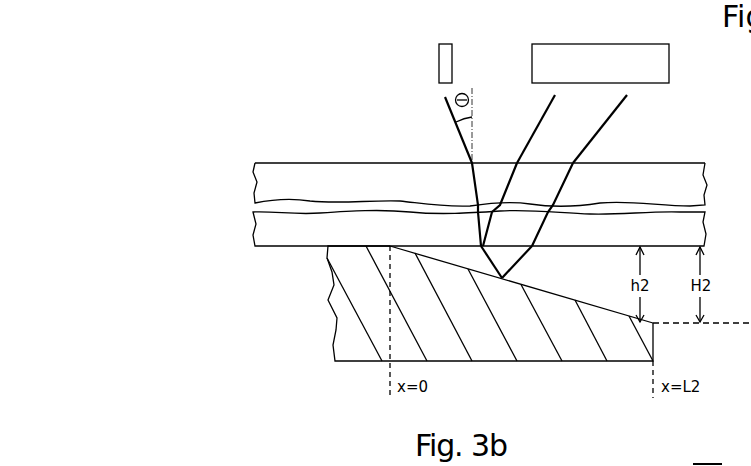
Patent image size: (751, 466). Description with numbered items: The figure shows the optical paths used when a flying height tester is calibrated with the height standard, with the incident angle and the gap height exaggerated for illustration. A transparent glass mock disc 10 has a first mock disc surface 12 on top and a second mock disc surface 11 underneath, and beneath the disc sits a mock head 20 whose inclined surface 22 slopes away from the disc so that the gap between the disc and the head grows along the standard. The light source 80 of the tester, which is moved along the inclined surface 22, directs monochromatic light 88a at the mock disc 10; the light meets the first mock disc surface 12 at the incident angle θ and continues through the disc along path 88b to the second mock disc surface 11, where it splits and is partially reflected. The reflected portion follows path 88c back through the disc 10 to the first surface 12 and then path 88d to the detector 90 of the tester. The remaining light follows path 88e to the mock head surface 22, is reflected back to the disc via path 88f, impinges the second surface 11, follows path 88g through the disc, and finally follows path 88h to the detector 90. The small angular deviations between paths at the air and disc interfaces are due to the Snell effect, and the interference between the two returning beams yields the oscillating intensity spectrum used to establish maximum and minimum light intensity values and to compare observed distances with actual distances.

The mock disc 10 is at (308, 180).
The first mock disc surface 12 is at (344, 163).
The second mock disc surface 11 is at (665, 247).
The light source 80 is at (442, 48).
The detector 90 is at (600, 49).
The monochromatic light 88a is at (458, 129).
The path 88b is at (474, 193).
The path 88c is at (505, 193).
The path 88d is at (532, 128).
The path 88e is at (500, 276).
The path 88f is at (520, 262).
The path 88g is at (557, 202).
The path 88h is at (602, 130).
The mock head 20 is at (378, 323).
The inclined surface 22 is at (587, 302).